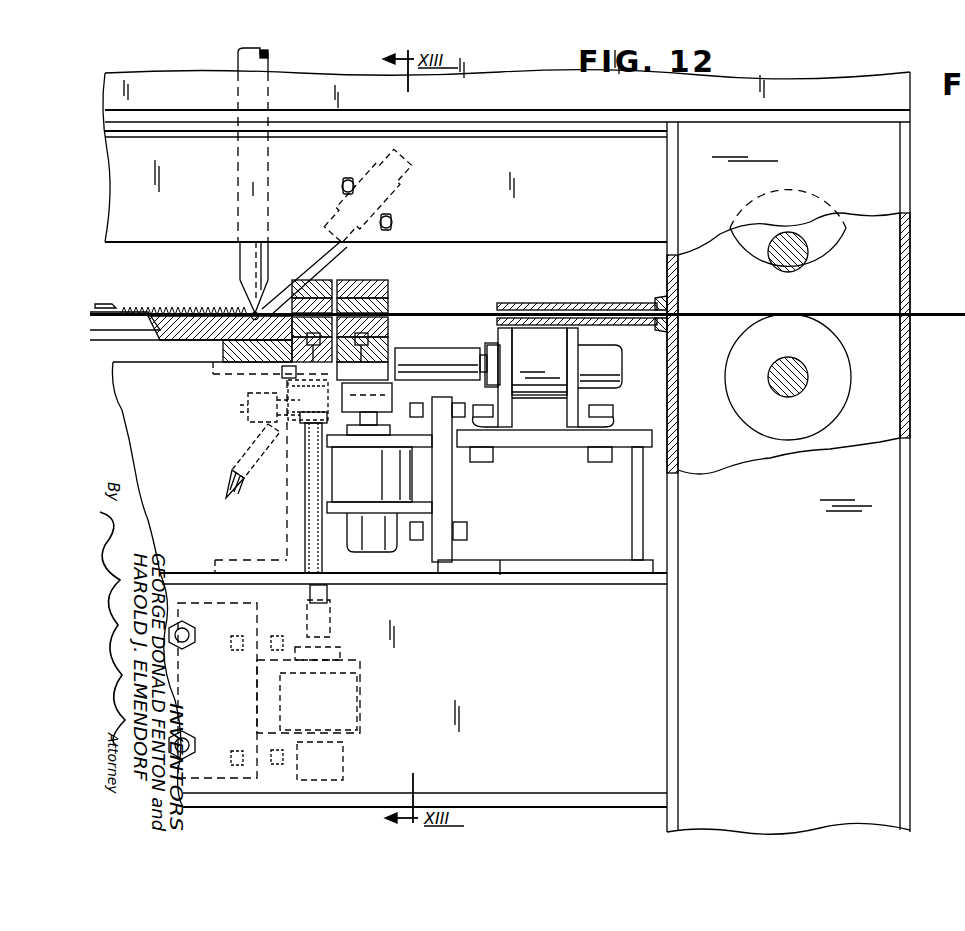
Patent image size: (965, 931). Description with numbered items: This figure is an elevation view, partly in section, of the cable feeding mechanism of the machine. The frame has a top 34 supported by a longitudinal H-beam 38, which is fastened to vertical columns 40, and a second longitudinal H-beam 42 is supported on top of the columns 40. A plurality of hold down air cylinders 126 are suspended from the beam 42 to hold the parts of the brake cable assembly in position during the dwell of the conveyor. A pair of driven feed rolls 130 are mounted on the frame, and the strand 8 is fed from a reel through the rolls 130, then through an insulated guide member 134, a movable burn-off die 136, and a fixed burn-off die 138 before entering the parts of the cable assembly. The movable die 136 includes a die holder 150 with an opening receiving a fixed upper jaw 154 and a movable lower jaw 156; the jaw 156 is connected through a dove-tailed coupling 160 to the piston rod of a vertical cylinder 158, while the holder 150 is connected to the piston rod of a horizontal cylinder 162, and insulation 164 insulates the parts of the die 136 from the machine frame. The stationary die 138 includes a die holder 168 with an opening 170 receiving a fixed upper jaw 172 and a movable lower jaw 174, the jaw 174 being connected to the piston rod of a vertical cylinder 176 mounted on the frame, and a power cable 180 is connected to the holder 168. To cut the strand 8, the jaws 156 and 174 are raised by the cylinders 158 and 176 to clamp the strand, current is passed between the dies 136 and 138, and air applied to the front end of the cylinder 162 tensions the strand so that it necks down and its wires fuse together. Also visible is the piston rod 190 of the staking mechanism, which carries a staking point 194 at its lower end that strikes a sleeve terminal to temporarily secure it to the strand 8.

The strand 8 is at (934, 316).
The top 34 is at (160, 362).
The longitudinal H-beam 38 is at (540, 651).
The vertical columns 40 is at (890, 505).
The second longitudinal H-beam 42 is at (522, 80).
The hold down air cylinders 126 is at (396, 201).
The driven feed rolls 130 is at (838, 275).
The insulated guide member 134 is at (600, 303).
The movable burn-off die 136 is at (392, 291).
The fixed burn-off die 138 is at (313, 283).
The die holder 150 is at (380, 283).
The fixed upper jaw 154 is at (392, 304).
The movable lower jaw 156 is at (392, 324).
The vertical cylinder 158 is at (372, 489).
The dove-tailed coupling 160 is at (388, 400).
The horizontal cylinder 162 is at (543, 386).
The insulation 164 is at (436, 488).
The die holder 168 is at (300, 376).
The opening 170 is at (280, 290).
The fixed upper jaw 172 is at (352, 296).
The movable lower jaw 174 is at (284, 368).
The vertical cylinder 176 is at (345, 707).
The power cable 180 is at (232, 472).
The piston rod 190 is at (268, 58).
The staking point 194 is at (245, 293).